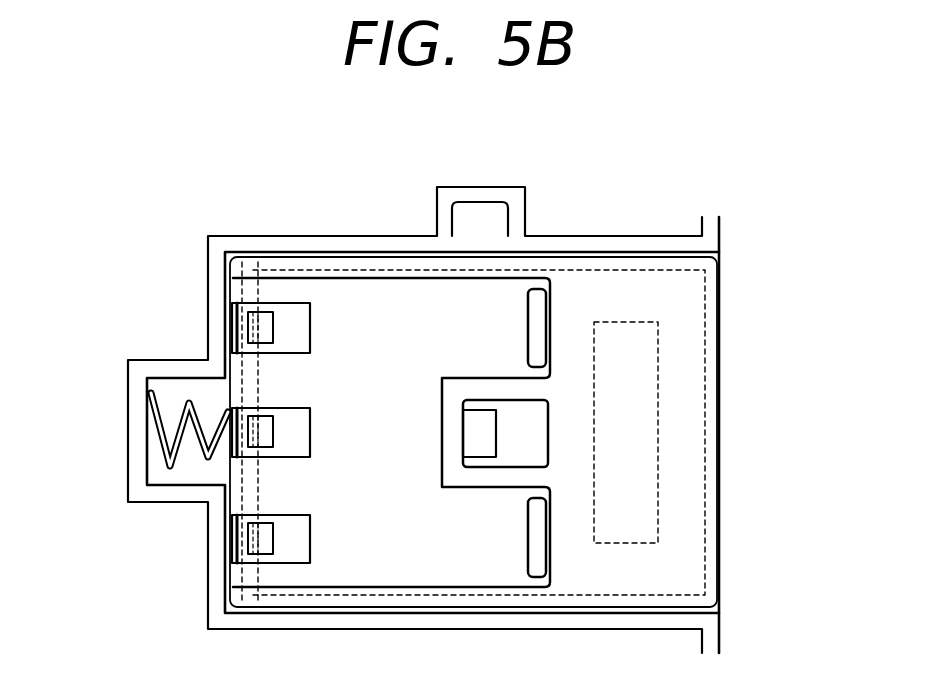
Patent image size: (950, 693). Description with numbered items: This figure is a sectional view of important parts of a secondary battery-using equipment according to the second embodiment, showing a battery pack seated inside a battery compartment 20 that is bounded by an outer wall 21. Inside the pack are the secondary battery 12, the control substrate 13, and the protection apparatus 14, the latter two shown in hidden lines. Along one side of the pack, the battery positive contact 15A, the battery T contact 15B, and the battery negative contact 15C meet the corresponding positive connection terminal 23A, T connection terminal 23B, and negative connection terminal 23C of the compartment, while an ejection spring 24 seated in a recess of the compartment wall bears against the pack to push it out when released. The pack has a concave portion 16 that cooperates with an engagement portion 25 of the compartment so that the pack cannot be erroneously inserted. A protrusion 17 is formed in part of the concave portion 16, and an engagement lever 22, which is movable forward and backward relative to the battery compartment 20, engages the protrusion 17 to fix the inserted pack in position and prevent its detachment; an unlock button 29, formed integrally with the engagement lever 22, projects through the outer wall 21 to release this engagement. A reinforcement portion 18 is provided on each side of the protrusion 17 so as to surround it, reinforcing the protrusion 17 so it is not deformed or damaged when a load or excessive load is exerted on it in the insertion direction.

The secondary battery 12 is at (660, 572).
The control substrate 13 is at (243, 265).
The protection apparatus 14 is at (645, 352).
The battery positive (+) contact 15A is at (235, 325).
The battery T contact 15B is at (229, 418).
The battery negative (−) contact 15C is at (235, 545).
The concave portion 16 is at (490, 310).
The protrusion 17 is at (452, 436).
The reinforcement portion 18 is at (510, 480).
The battery compartment 20 is at (726, 207).
The outer wall 21 is at (620, 243).
The engagement lever 22 is at (478, 445).
The positive (+) connection terminal 23A is at (268, 328).
The T connection terminal 23B is at (268, 433).
The (−) connection terminal 23C is at (268, 540).
The ejection spring 24 is at (157, 468).
The engagement portion 25 is at (540, 335).
The unlock button 29 is at (472, 205).